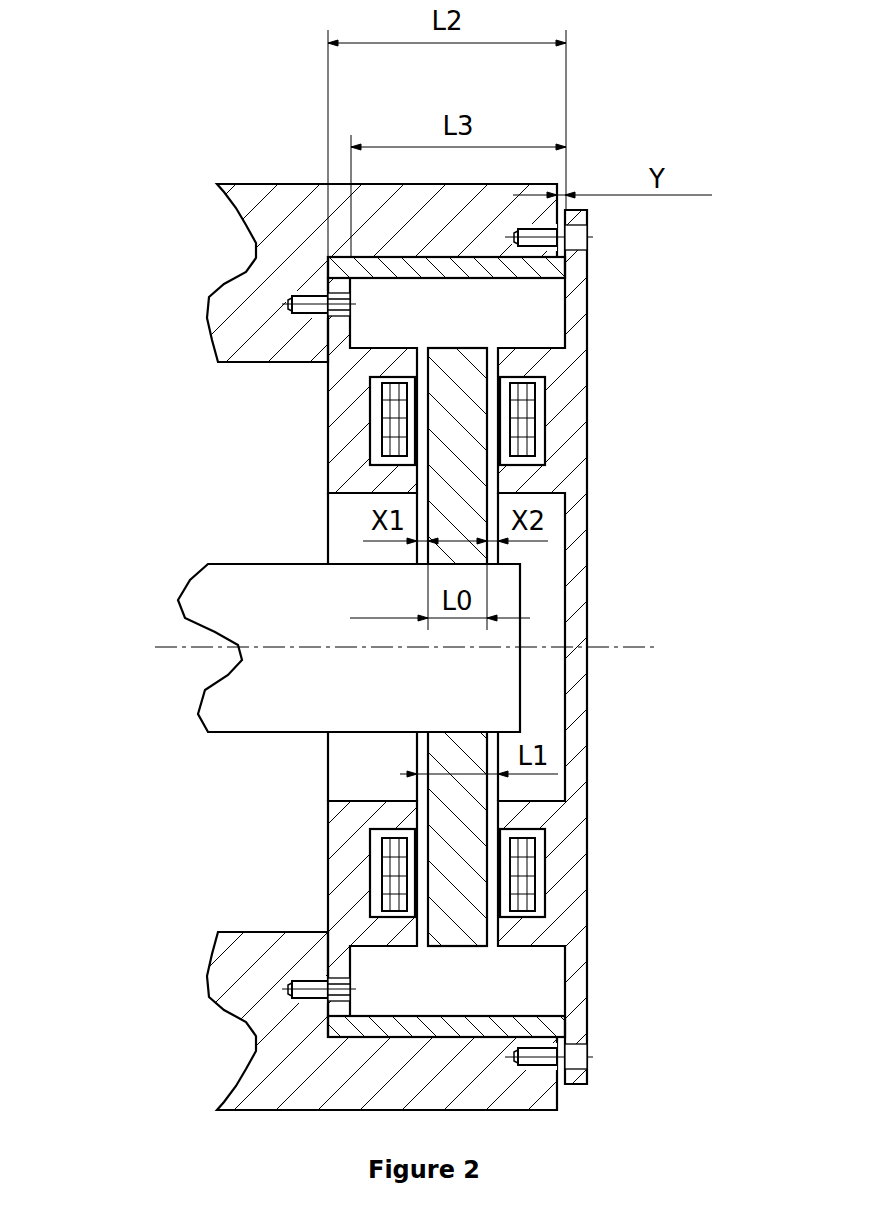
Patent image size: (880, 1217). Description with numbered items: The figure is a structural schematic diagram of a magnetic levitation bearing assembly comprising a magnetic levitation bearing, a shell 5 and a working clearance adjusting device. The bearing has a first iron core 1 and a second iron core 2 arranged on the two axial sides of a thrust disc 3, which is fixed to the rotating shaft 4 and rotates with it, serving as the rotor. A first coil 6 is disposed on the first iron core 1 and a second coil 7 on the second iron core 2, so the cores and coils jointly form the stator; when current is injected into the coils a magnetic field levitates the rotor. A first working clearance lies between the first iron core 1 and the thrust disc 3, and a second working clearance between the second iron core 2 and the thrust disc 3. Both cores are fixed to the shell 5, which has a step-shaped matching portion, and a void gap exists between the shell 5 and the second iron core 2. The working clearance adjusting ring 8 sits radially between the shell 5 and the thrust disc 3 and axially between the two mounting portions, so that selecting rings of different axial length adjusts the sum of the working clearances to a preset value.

The first iron core 1 is at (343, 898).
The second iron core 2 is at (577, 309).
The thrust disc 3 is at (460, 365).
The rotating shaft 4 is at (248, 593).
The shell 5 is at (507, 1088).
The first coil 6 is at (390, 395).
The second coil 7 is at (520, 875).
The working clearance adjusting ring 8 is at (393, 258).